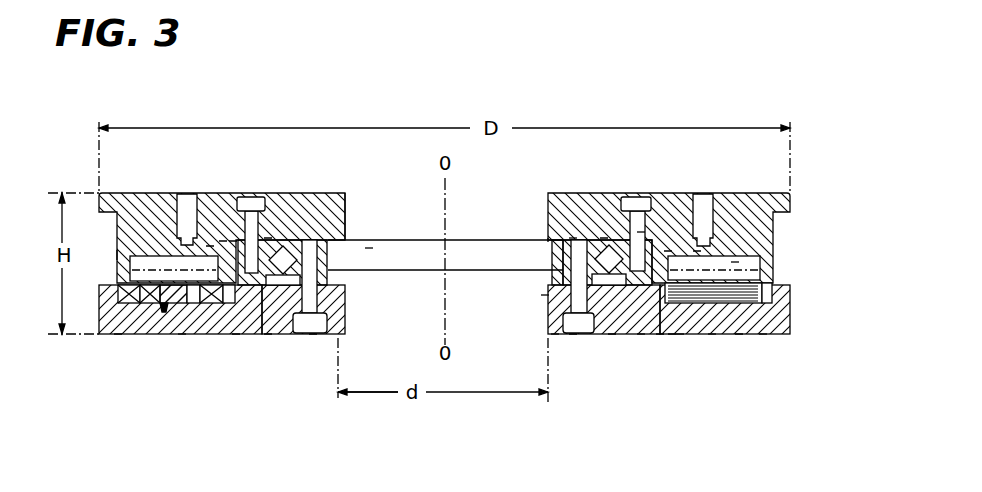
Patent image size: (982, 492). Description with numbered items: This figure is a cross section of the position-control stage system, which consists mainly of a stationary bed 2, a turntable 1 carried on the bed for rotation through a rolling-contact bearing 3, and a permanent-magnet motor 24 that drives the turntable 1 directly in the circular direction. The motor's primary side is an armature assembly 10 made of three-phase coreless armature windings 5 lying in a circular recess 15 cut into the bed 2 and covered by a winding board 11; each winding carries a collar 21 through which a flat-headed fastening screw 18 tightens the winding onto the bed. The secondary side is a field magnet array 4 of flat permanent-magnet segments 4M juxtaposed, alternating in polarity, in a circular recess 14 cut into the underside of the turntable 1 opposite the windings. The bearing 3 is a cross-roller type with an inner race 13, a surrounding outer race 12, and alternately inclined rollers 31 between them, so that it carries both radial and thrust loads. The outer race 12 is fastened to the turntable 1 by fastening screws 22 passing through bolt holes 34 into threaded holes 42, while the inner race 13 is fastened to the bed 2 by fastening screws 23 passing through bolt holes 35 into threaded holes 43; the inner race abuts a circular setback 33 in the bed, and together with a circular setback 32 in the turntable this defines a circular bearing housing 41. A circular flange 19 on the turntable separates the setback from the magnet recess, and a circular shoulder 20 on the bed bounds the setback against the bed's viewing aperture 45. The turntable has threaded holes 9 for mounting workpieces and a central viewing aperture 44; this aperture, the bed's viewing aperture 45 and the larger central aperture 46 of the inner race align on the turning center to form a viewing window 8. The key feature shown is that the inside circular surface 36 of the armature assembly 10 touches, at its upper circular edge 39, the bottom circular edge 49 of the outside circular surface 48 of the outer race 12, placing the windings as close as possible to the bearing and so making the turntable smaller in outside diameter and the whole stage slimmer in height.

The turntable 1 is at (125, 200).
The stationary bed 2 is at (100, 337).
The rolling-contact bearing 3 is at (268, 237).
The field magnet array 4 is at (768, 258).
The permanent-magnet segments 4M is at (148, 255).
The armature windings 5 is at (118, 336).
The viewing window 8 is at (402, 300).
The threaded holes 9 is at (188, 196).
The armature assembly 10 is at (763, 336).
The winding board 11 is at (772, 290).
The outer race 12 is at (244, 336).
The inner race 13 is at (286, 336).
The circular recess 14 is at (735, 262).
The circular recess 15 is at (712, 336).
The flat-headed fastening screw 18 is at (147, 336).
The circular flange 19 is at (680, 336).
The circular shoulder 20 is at (545, 295).
The collar 21 is at (182, 336).
The fastening screws 22 is at (243, 237).
The fastening screws 23 is at (313, 336).
The permanent-magnet motor 24 is at (117, 255).
The rollers 31 is at (267, 235).
The circular setback 32 is at (288, 250).
The circular setback 33 is at (268, 336).
The bolt holes 34 is at (641, 232).
The bolt holes 35 is at (555, 336).
The inside circular surface 36 is at (236, 336).
The upper circular edge 39 is at (210, 245).
The circular bearing housing 41 is at (548, 238).
The threaded holes 42 is at (641, 336).
The threaded holes 43 is at (573, 238).
The viewing aperture 44 is at (351, 195).
The viewing aperture 45 is at (368, 374).
The central aperture 46 is at (369, 248).
The outside circular surface 48 is at (233, 240).
The bottom circular edge 49 is at (223, 240).